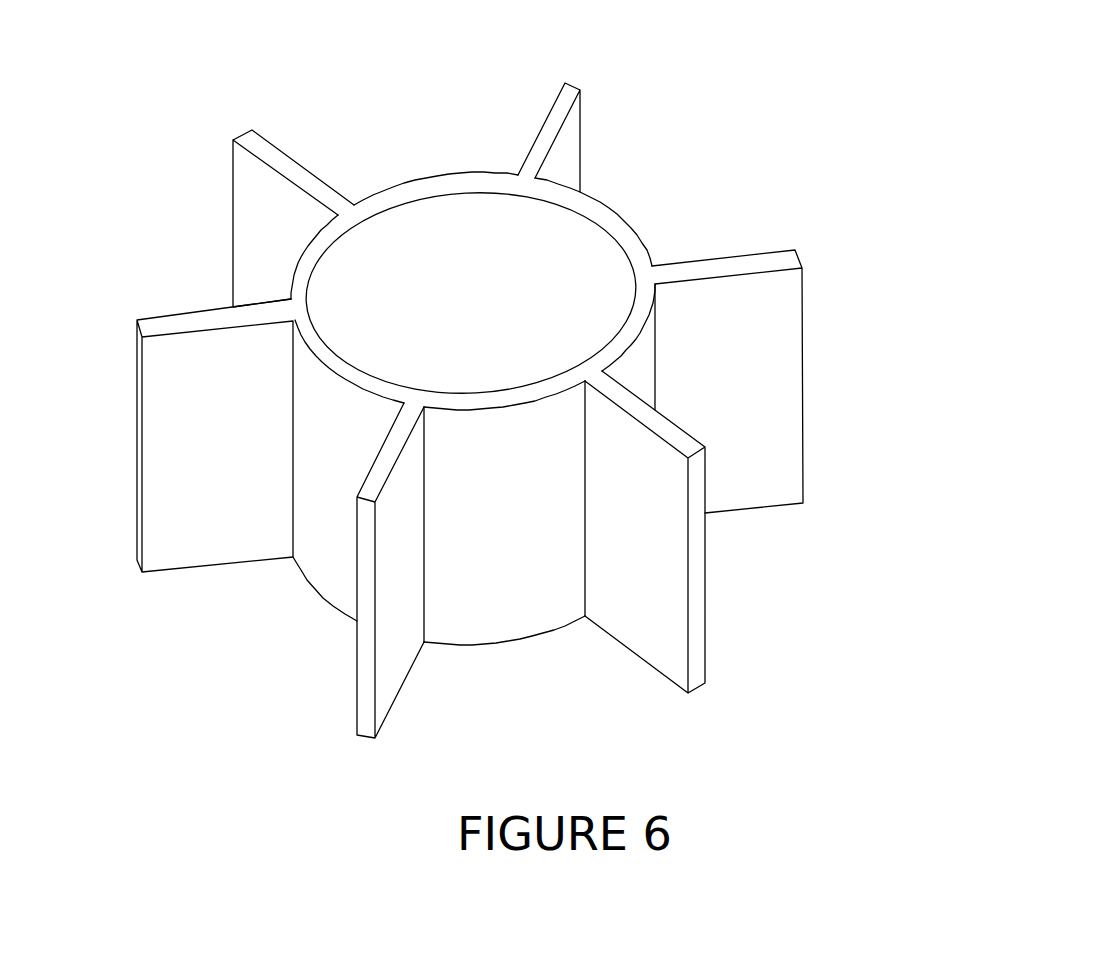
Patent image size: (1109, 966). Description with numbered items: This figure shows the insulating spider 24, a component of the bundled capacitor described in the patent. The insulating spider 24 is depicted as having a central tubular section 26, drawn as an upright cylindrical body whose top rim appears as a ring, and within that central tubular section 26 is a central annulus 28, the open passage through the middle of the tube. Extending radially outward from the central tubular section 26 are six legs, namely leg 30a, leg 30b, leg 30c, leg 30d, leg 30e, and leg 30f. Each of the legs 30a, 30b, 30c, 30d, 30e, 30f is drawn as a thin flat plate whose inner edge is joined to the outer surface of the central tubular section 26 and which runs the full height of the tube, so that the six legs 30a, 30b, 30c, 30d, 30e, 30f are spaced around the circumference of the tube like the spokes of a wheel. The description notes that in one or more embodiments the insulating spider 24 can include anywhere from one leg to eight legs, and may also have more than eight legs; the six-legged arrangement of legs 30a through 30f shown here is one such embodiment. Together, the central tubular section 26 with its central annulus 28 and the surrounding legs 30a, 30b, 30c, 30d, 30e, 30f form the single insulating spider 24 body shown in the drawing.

The insulating spider 24 is at (775, 93).
The central tubular section 26 is at (463, 185).
The central annulus 28 is at (583, 262).
The leg 30a is at (152, 328).
The leg 30b is at (278, 157).
The leg 30c is at (565, 108).
The leg 30d is at (790, 258).
The leg 30e is at (698, 657).
The leg 30f is at (360, 733).